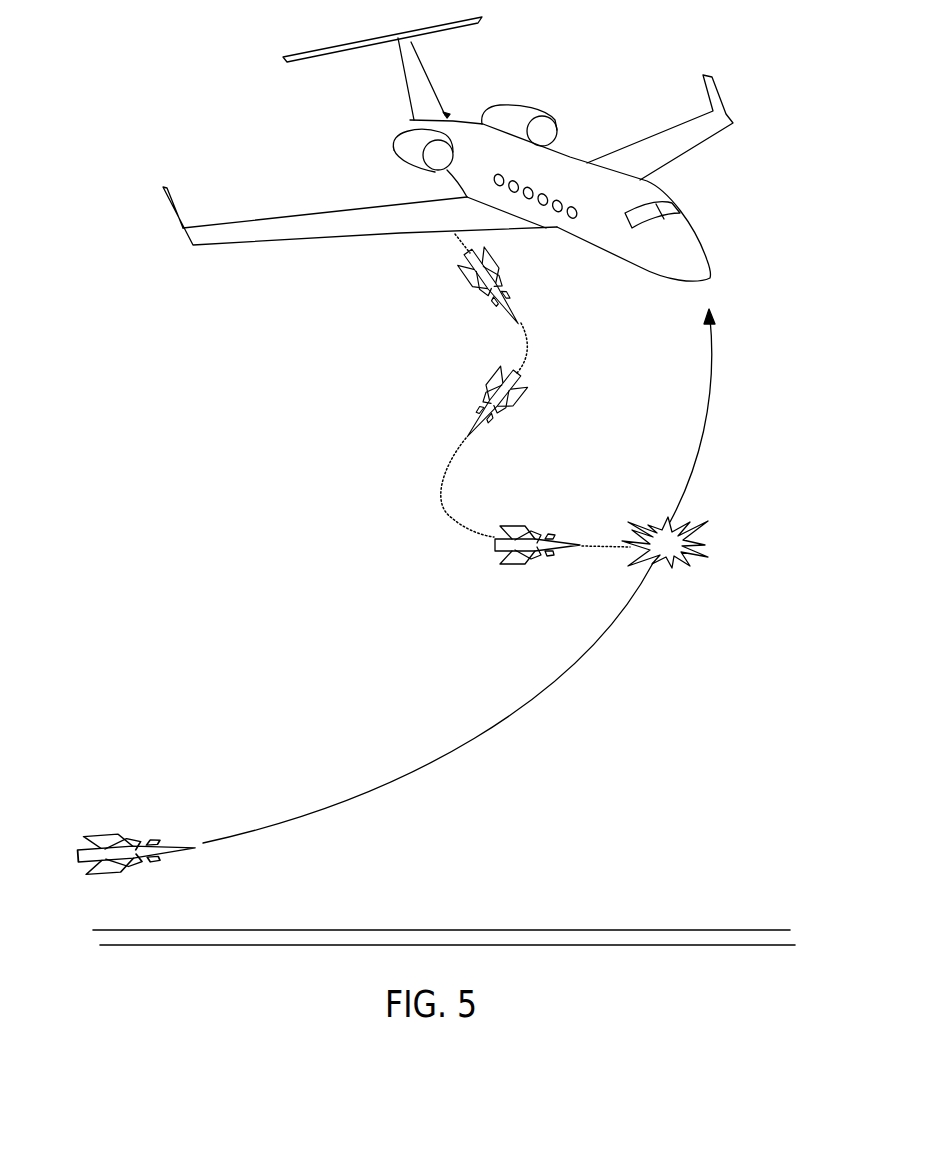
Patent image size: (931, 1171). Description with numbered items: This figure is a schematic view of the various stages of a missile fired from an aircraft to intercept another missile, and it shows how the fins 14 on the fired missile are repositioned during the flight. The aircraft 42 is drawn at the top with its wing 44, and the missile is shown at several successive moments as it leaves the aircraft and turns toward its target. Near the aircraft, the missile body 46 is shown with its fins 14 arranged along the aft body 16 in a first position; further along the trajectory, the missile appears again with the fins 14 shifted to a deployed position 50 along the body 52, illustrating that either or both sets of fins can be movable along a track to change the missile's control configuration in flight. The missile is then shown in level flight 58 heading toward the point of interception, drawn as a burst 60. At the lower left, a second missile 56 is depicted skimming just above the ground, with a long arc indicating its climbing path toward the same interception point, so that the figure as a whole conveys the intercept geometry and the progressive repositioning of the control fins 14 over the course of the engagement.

The fins 14 is at (500, 262).
The aft body 16 is at (470, 253).
The aircraft 42 is at (567, 170).
The aircraft wing 44 is at (372, 227).
The projectile body 46 is at (485, 298).
The deployed wings 50 is at (517, 373).
The projectile body in glide 52 is at (477, 413).
The projectile in terminal approach 56 is at (160, 865).
The projectile in flight 58 is at (525, 562).
The target 60 is at (683, 563).